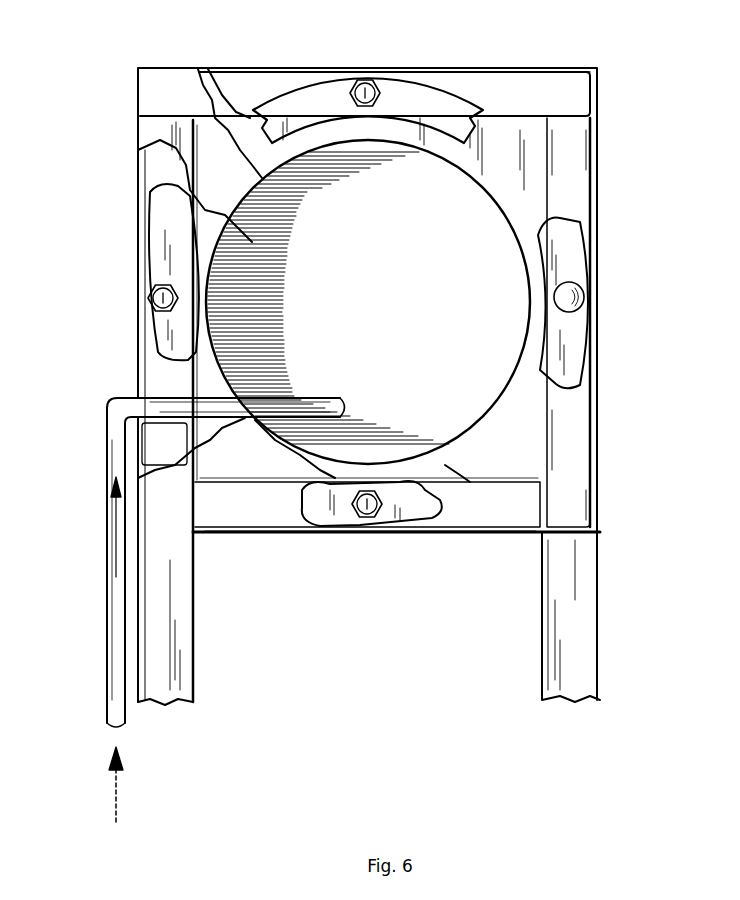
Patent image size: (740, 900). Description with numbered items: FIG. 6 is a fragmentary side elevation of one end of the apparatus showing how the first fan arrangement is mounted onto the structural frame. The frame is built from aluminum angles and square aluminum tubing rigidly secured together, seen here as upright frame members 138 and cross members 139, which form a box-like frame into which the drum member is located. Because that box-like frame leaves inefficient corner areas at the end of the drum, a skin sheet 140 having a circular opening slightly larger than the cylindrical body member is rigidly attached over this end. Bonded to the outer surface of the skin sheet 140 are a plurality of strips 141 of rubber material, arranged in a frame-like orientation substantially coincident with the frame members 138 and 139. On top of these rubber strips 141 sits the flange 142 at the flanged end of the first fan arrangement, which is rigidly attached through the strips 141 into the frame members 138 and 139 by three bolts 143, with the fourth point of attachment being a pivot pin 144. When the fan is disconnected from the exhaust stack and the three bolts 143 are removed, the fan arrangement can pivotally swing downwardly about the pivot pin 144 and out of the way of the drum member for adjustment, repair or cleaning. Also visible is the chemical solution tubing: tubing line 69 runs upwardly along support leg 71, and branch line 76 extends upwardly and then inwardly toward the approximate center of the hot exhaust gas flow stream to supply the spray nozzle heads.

The tubing line 69 is at (118, 613).
The support leg 71 is at (172, 668).
The branch line 76 is at (108, 455).
The upright frame member 138 is at (138, 171).
The cross member 139 is at (463, 68).
The skin sheet 140 is at (185, 119).
The strips of rubber material 141 is at (550, 92).
The flange 142 is at (165, 238).
The bolt 143 is at (370, 85).
The pivot pin 144 is at (570, 297).